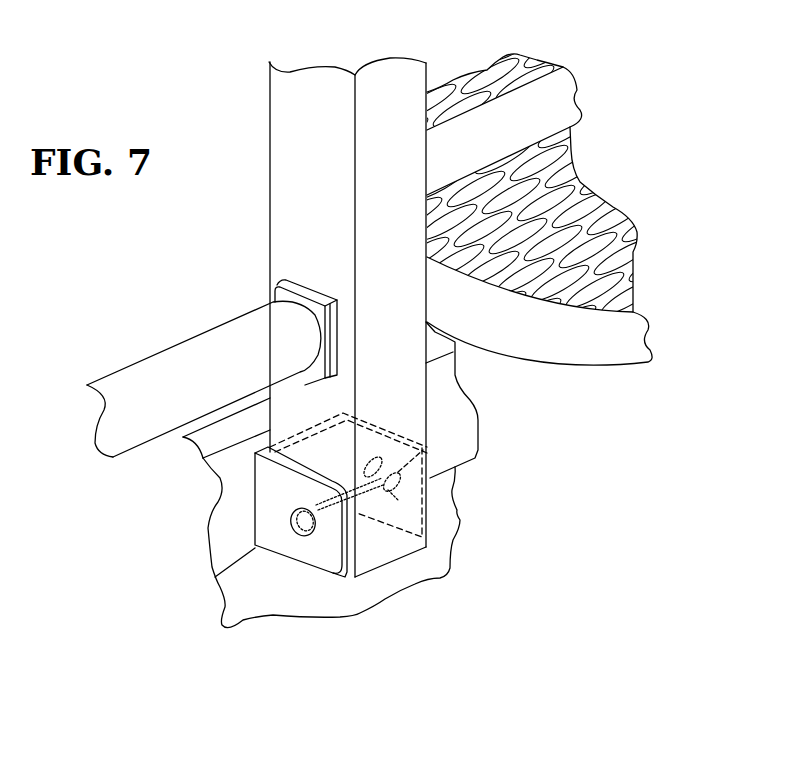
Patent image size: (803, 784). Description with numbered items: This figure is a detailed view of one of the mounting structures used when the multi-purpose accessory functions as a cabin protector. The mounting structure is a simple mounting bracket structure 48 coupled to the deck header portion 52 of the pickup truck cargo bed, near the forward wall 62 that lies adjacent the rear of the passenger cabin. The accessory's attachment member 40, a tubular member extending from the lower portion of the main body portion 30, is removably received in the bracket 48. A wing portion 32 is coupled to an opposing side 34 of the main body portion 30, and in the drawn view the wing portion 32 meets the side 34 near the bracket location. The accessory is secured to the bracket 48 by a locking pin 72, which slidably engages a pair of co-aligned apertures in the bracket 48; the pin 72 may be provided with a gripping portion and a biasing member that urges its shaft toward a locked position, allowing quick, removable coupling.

The main body portion 30 is at (548, 182).
The wing portion 32 is at (200, 358).
The opposing side 34 is at (285, 99).
The attachment member 40 is at (426, 394).
The mounting bracket structure 48 is at (272, 533).
The deck header portion 52 is at (237, 487).
The forward wall 62 is at (433, 563).
The locking pin 72 is at (427, 445).